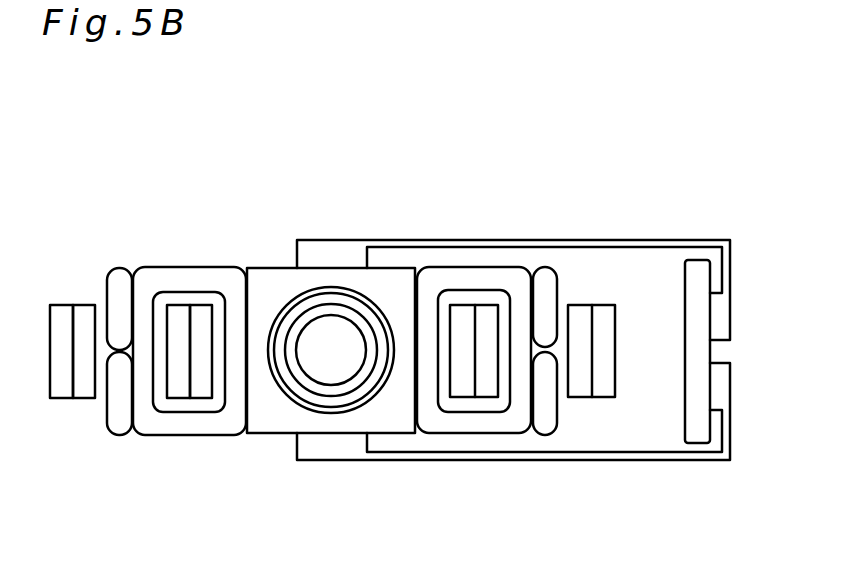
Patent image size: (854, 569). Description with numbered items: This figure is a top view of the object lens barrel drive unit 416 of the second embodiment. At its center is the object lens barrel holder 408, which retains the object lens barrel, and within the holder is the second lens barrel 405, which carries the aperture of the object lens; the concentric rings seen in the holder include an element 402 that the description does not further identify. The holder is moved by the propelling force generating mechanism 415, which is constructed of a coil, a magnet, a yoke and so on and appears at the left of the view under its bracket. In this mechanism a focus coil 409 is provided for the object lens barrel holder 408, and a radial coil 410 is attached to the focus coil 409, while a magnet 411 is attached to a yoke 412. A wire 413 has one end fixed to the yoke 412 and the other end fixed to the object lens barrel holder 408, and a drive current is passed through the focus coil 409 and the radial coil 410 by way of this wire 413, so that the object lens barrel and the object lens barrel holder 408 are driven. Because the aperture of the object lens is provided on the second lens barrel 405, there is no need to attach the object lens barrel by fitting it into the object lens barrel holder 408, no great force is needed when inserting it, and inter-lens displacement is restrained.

The magnet 402 is at (310, 363).
The second lens barrel 405 is at (333, 403).
The object lens barrel holder 408 is at (393, 413).
The focus coil 409 is at (215, 280).
The radial coil 410 is at (119, 269).
The magnet 411 is at (180, 310).
The yoke 412 is at (203, 312).
The wire 413 is at (338, 248).
The propelling force generating mechanism 415 is at (282, 155).
The object lens barrel drive unit 416 is at (177, 451).